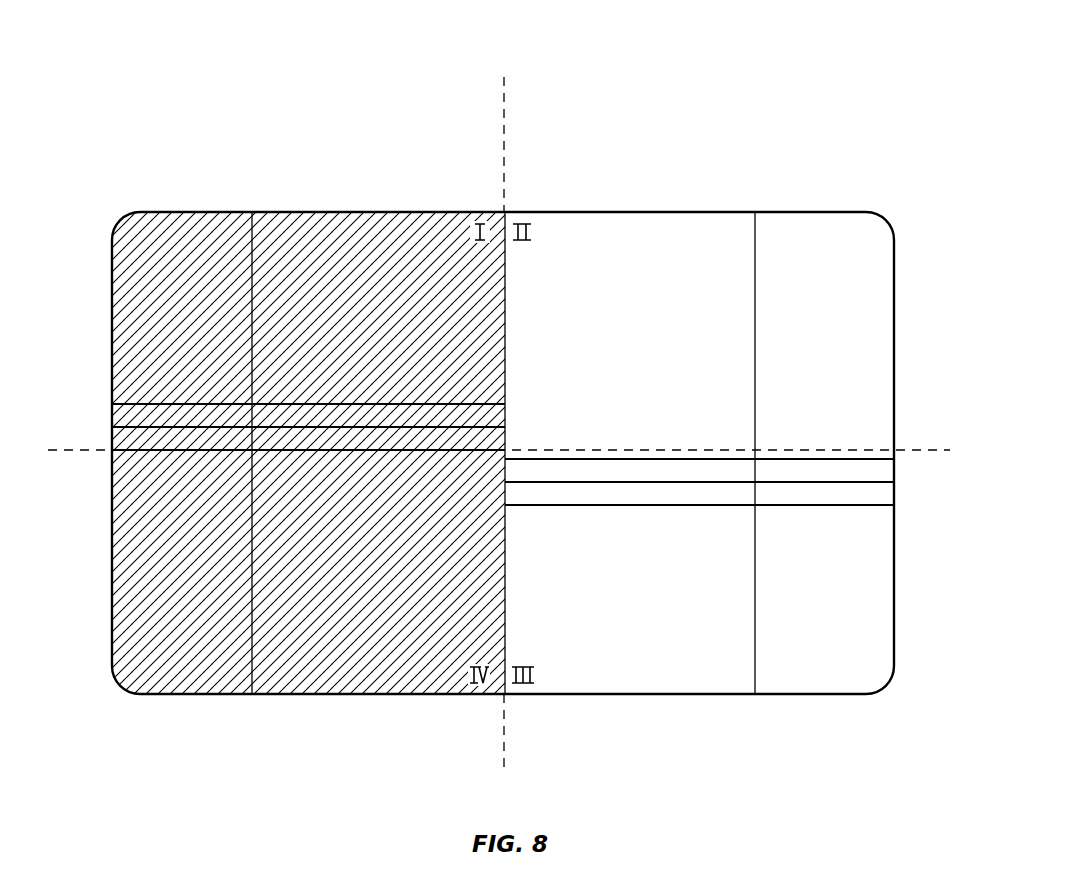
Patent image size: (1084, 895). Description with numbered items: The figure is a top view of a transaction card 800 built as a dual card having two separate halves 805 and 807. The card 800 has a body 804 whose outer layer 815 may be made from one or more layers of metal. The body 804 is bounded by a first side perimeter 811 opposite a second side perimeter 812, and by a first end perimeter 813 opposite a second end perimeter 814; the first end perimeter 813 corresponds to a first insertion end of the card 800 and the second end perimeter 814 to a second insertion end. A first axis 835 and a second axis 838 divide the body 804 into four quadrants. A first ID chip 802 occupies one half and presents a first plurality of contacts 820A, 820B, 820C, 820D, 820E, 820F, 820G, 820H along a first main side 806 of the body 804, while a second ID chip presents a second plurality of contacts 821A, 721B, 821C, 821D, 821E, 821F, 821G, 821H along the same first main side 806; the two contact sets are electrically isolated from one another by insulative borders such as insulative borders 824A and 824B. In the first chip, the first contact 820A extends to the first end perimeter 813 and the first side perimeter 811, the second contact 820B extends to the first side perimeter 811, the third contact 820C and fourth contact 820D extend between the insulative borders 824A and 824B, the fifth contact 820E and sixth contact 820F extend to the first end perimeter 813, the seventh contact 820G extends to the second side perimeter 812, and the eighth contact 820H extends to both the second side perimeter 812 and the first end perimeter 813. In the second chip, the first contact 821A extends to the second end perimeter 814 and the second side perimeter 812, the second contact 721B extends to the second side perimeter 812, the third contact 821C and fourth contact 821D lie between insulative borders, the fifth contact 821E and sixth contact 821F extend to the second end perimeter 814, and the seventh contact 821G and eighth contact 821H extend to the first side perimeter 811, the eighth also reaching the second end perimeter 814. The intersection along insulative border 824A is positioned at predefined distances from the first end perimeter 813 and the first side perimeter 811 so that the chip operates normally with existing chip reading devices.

The card 800 is at (727, 100).
The first ID chip 802 is at (180, 370).
The body 804 is at (716, 212).
The first half 805 is at (405, 712).
The first main side 806 is at (644, 235).
The second half 807 is at (620, 722).
The first side perimeter 811 is at (562, 212).
The second side perimeter 812 is at (562, 696).
The first end perimeter 813 is at (112, 577).
The second end perimeter 814 is at (895, 313).
The outer layer 815 is at (376, 591).
The first contact 820A is at (190, 232).
The second contact 820B is at (360, 232).
The third contact 820C is at (403, 415).
The fourth contact 820D is at (413, 438).
The fifth contact 820E is at (160, 440).
The sixth contact 820F is at (157, 410).
The seventh contact 820G is at (340, 680).
The eighth contact 820H is at (178, 680).
The insulative border 824A is at (253, 240).
The insulative border 824B is at (504, 214).
The first contact 821A is at (877, 605).
The third contact 821C is at (663, 496).
The fourth contact 821D is at (652, 472).
The fifth contact 821E is at (830, 472).
The sixth contact 821F is at (830, 497).
The seventh contact 821G is at (593, 235).
The eighth contact 821H is at (840, 233).
The second contact 721B is at (675, 676).
The first axis 835 is at (504, 108).
The second axis 838 is at (918, 455).